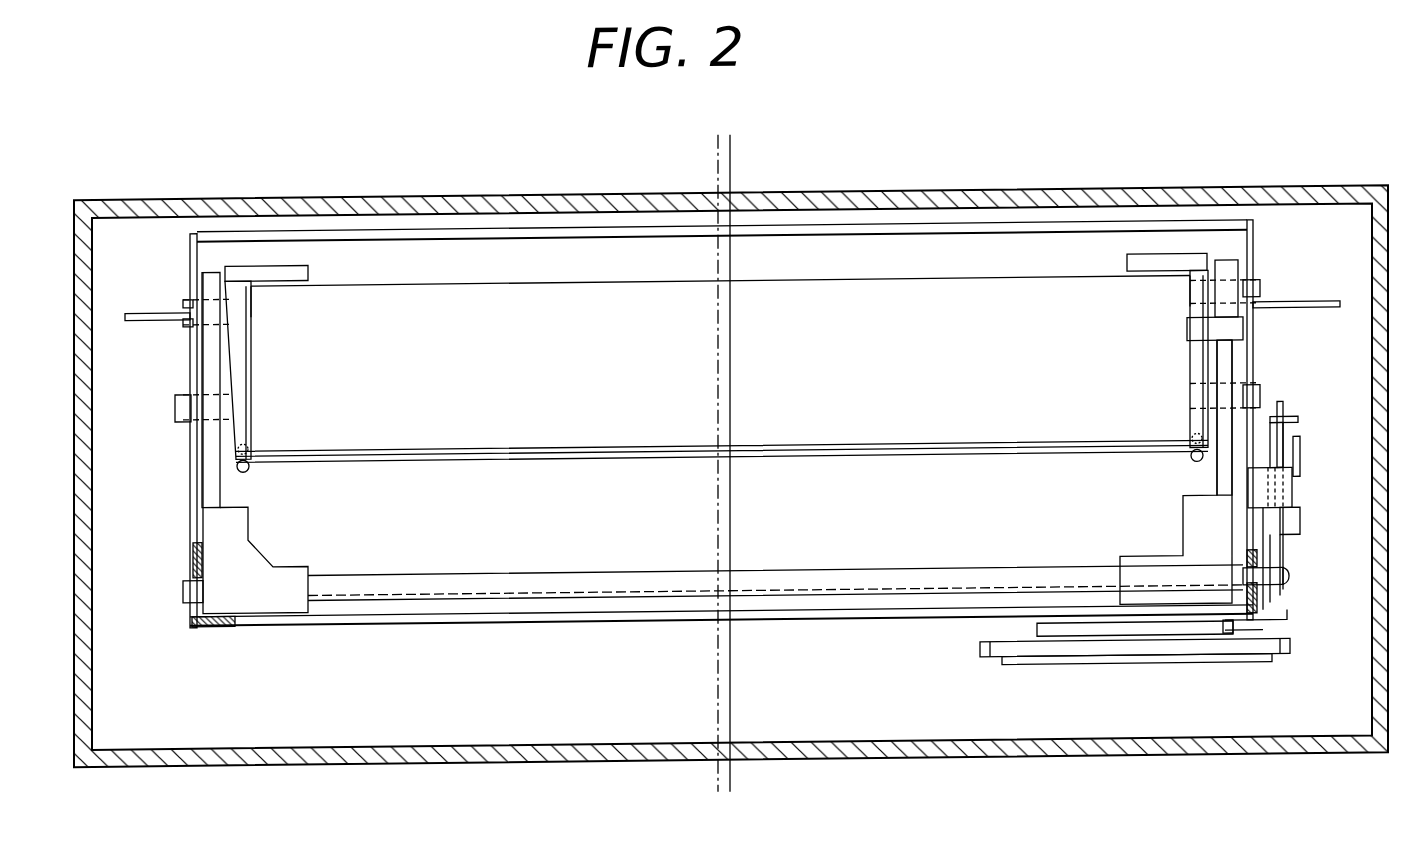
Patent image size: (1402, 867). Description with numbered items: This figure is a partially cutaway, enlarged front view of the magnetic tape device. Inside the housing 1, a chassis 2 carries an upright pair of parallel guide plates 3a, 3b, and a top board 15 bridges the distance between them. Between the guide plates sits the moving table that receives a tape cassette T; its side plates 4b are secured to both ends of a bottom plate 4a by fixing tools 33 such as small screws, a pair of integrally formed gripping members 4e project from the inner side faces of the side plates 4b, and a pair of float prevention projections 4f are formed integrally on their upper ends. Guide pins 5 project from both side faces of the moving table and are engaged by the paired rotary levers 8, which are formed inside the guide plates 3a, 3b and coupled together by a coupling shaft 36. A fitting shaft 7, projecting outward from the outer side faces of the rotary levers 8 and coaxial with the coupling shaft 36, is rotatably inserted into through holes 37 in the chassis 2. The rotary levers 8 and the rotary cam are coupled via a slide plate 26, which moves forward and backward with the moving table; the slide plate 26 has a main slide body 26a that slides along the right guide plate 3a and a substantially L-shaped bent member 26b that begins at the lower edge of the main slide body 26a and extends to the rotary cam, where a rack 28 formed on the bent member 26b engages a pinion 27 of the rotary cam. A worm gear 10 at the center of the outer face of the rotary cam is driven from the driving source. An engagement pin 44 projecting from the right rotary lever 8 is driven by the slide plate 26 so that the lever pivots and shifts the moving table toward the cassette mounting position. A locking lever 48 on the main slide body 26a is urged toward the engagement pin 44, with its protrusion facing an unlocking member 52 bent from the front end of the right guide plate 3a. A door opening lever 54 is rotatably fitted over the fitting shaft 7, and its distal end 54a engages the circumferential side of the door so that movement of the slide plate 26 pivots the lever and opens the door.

The housing 1 is at (898, 208).
The chassis 2 is at (578, 632).
The right guide plate 3a is at (1254, 244).
The guide plate 3b is at (193, 253).
The bottom plate 4a is at (648, 466).
The side plates 4b is at (248, 385).
The gripping members 4e is at (255, 303).
The float prevention projections 4f is at (308, 276).
The guide pins 5 is at (183, 307).
The fitting shaft 7 is at (183, 593).
The rotary levers 8 is at (211, 275).
The worm gear 10 is at (982, 663).
The top board 15 is at (620, 253).
The slide plate 26 is at (1372, 816).
The main slide body 26a is at (1284, 640).
The bent member 26b is at (1276, 646).
The pinion 27 is at (1077, 650).
The rack 28 is at (1228, 650).
The fixing tools 33 is at (250, 474).
The coupling shaft 36 is at (830, 582).
The through holes 37 is at (197, 612).
The engagement pin 44 is at (1300, 534).
The locking lever 48 is at (1283, 418).
The unlocking member 52 is at (1296, 495).
The door opening lever 54 is at (1222, 437).
The distal end 54a is at (1195, 343).
The tray T is at (818, 314).